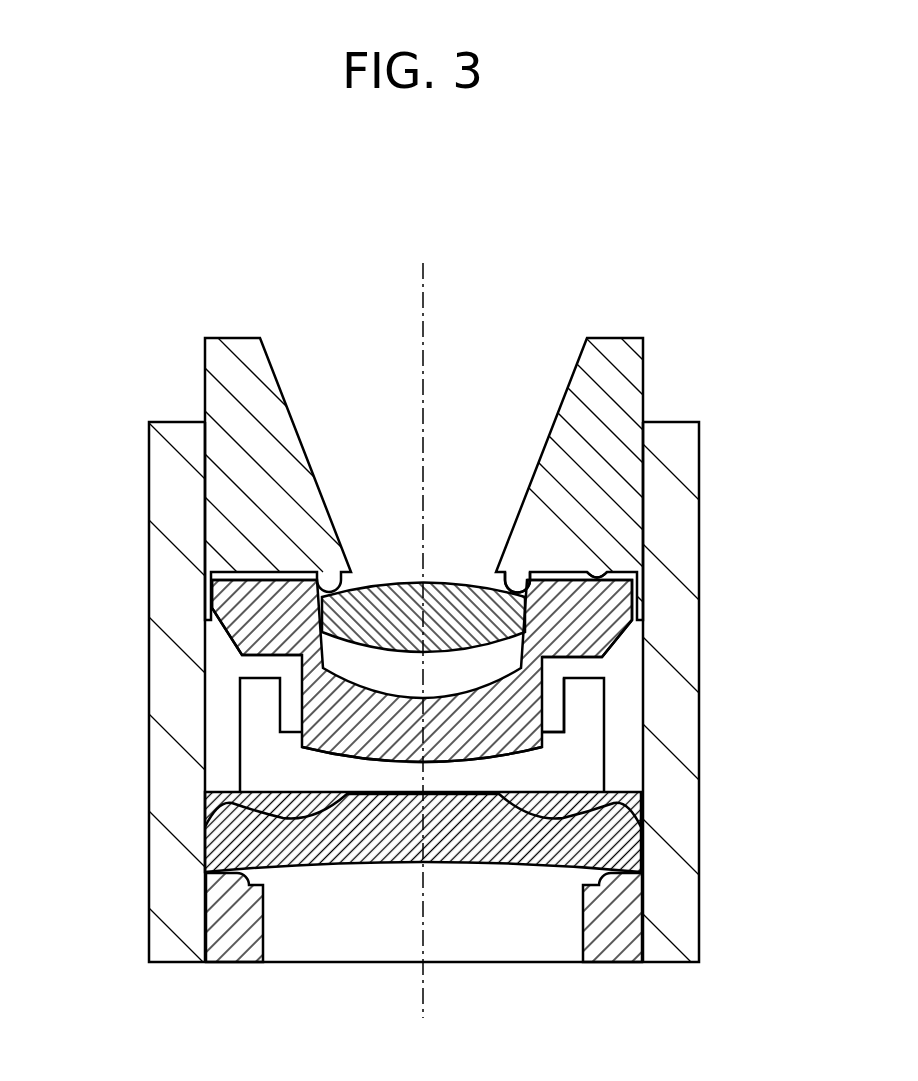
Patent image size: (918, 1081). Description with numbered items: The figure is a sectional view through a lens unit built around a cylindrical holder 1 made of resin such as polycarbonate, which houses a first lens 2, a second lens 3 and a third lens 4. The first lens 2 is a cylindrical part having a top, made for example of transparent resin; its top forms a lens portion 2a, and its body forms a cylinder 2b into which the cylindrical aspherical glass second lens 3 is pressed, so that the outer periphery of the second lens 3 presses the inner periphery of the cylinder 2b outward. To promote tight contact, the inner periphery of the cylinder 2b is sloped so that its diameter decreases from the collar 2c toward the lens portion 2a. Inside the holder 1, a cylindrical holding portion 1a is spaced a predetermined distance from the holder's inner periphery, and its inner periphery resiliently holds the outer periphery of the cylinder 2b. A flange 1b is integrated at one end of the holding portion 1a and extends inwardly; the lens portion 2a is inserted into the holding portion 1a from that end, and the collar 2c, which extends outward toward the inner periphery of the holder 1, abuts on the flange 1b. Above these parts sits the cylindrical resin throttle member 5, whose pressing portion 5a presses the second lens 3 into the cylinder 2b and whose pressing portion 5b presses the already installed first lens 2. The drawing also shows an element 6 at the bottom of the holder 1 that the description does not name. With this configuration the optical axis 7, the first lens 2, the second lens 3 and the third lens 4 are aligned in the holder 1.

The holder 1 is at (675, 925).
The holding portion 1a is at (557, 722).
The flange 1b is at (260, 670).
The first lens 2 is at (633, 604).
The lens portion 2a is at (420, 766).
The cylinder 2b is at (558, 608).
The collar 2c is at (240, 607).
The second lens 3 is at (490, 642).
The third lens 4 is at (203, 827).
The throttle member 5 is at (252, 357).
The pressing portion 5a is at (518, 578).
The pressing portion 5b is at (605, 575).
The spacer 6 is at (223, 940).
The optical axis 7 is at (425, 315).